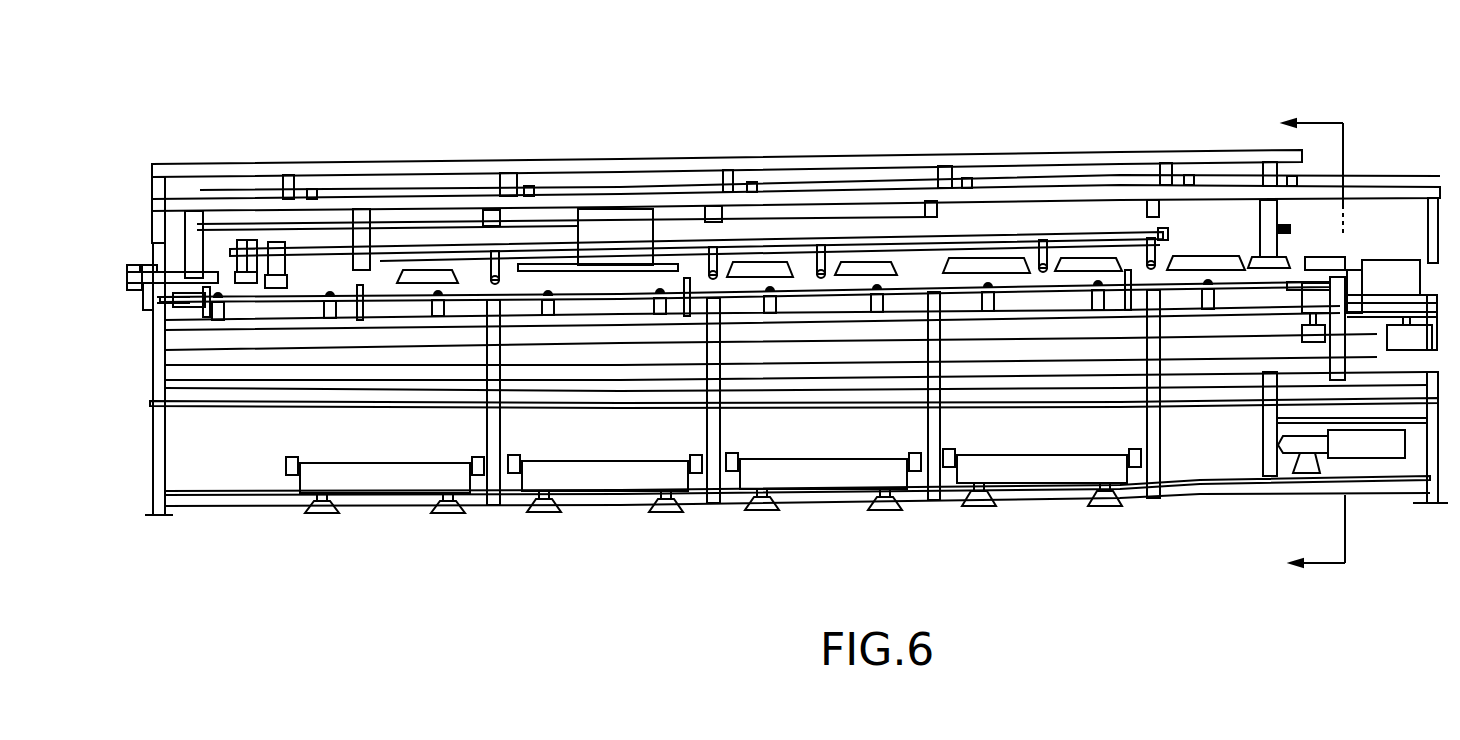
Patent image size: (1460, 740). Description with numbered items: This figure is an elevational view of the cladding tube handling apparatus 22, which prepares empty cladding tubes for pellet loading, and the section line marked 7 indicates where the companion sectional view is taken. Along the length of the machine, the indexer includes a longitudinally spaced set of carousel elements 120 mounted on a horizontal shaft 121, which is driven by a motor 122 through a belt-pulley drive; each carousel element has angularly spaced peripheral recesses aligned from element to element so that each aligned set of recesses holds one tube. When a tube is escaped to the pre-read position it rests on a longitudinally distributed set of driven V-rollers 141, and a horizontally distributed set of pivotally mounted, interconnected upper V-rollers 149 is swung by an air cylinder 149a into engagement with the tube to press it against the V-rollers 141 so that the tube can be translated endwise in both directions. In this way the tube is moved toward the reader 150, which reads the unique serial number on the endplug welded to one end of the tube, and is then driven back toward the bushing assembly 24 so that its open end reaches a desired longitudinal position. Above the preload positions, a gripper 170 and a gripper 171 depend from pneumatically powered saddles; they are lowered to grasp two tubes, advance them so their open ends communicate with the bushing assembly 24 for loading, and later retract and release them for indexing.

The tube handling apparatus 22 is at (1038, 115).
The section line 7- 7 is at (1315, 346).
The bushing assembly 24 is at (136, 268).
The carousel elements 120 is at (492, 280).
The horizontal shaft 121 is at (1312, 282).
The motor 122 is at (1380, 445).
The V-rollers 141 is at (878, 262).
The upper V-rollers 149 is at (690, 258).
The air cylinder 149a is at (1232, 246).
The reader 150 is at (1385, 278).
The gripper 170 is at (240, 240).
The gripper 171 is at (293, 258).